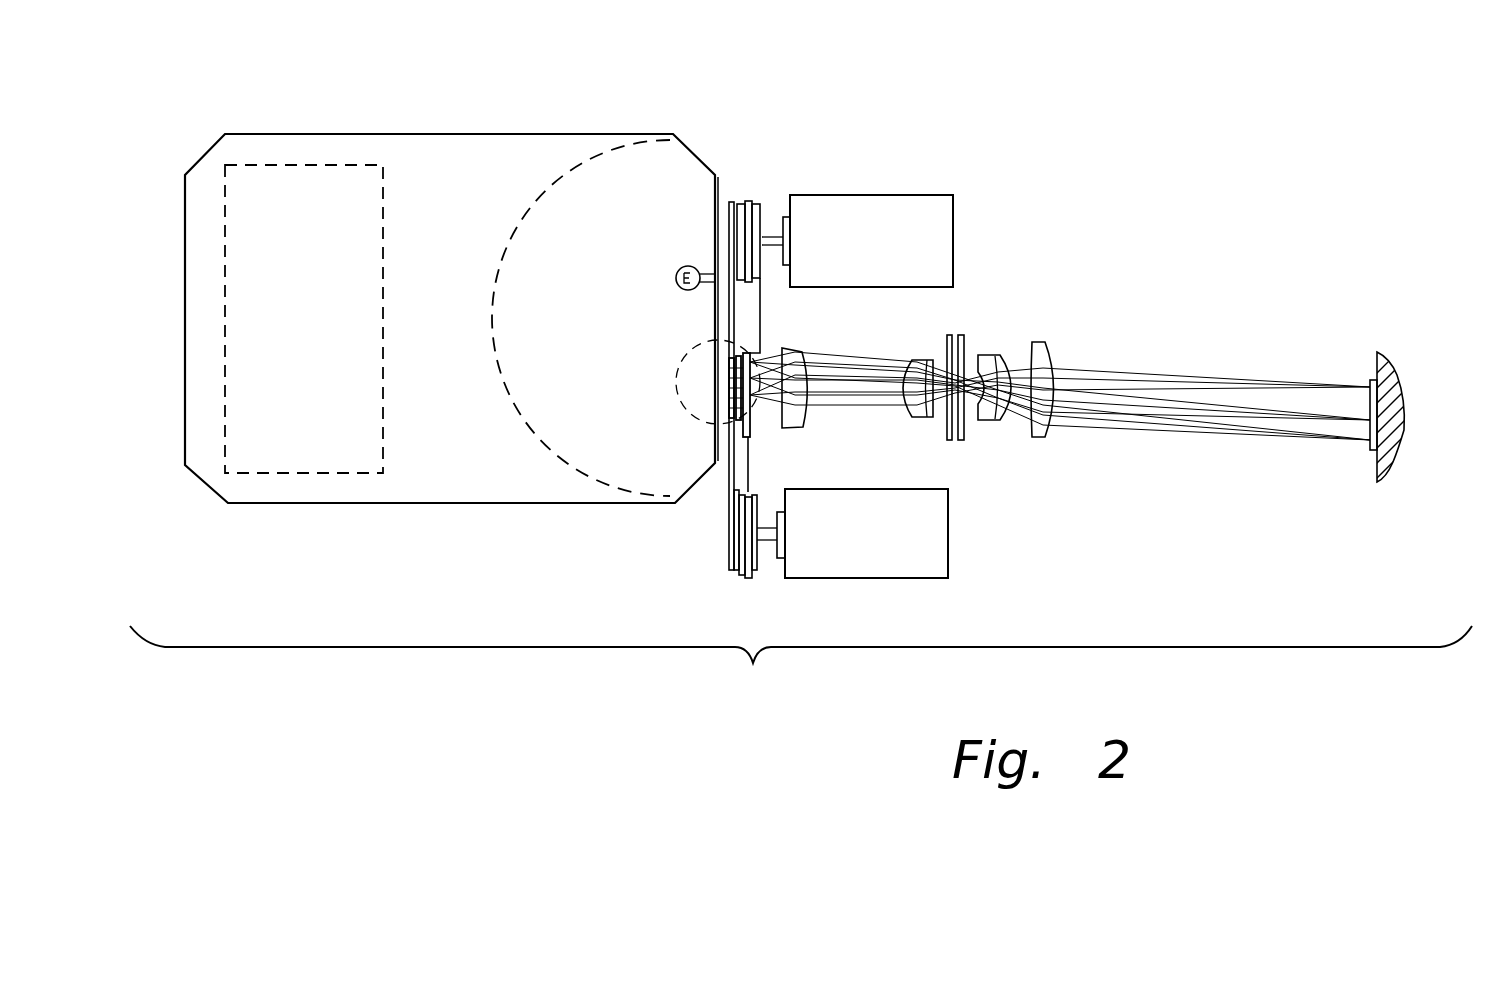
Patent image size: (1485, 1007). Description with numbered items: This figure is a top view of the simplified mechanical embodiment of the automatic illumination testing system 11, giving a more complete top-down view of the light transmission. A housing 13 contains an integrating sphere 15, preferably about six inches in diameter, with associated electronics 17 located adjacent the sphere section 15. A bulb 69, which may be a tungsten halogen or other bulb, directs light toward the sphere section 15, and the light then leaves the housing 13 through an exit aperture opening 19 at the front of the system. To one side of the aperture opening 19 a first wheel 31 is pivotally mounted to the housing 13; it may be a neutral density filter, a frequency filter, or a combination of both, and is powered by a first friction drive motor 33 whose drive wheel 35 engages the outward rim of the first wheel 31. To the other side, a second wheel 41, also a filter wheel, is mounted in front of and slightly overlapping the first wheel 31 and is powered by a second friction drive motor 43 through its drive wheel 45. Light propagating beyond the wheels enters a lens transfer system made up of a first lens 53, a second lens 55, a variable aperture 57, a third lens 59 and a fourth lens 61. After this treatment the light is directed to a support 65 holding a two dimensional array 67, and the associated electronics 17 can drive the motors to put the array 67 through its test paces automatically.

The automatic illumination testing system 11 is at (801, 663).
The housing 13 is at (452, 134).
The integrating sphere 15 is at (545, 437).
The associated electronics 17 is at (337, 165).
The exit aperture opening 19 is at (722, 391).
The first wheel 31 is at (748, 467).
The first friction drive motor 33 is at (935, 530).
The drive wheel 35 is at (748, 578).
The second wheel 41 is at (757, 310).
The second friction drive motor 43 is at (930, 197).
The drive wheel 45 is at (752, 202).
The first lens 53 is at (795, 347).
The second lens 55 is at (918, 360).
The variable aperture 57 is at (960, 440).
The third lens 59 is at (990, 355).
The fourth lens 61 is at (1042, 342).
The support 65 is at (1400, 400).
The two dimensional array 67 is at (1372, 382).
The bulb 69 is at (687, 265).